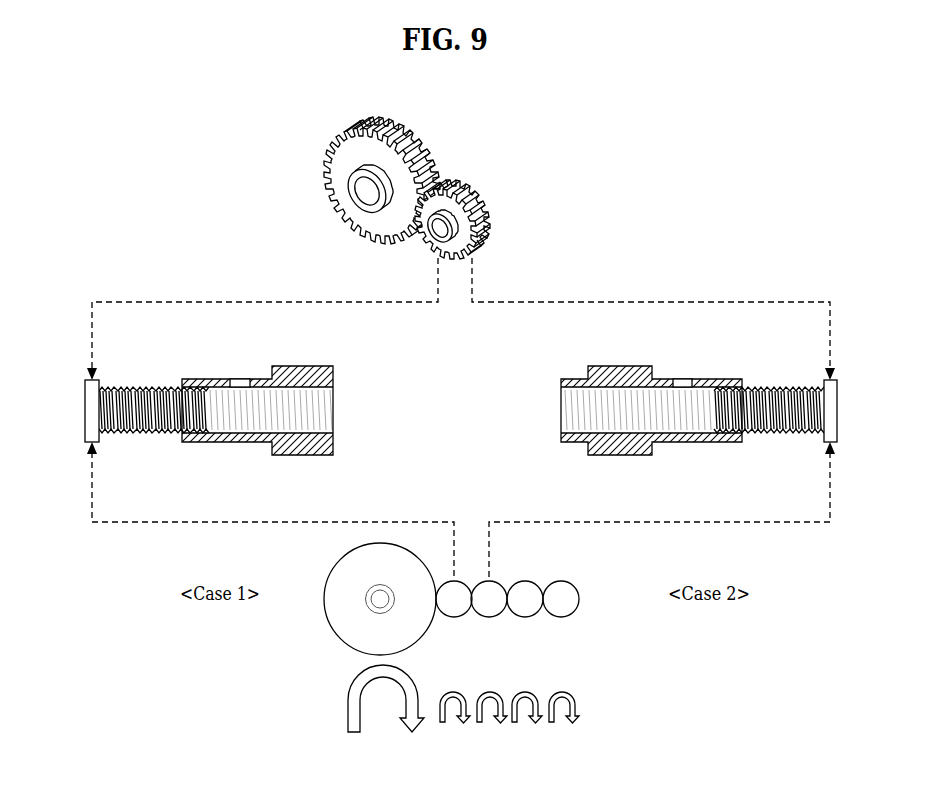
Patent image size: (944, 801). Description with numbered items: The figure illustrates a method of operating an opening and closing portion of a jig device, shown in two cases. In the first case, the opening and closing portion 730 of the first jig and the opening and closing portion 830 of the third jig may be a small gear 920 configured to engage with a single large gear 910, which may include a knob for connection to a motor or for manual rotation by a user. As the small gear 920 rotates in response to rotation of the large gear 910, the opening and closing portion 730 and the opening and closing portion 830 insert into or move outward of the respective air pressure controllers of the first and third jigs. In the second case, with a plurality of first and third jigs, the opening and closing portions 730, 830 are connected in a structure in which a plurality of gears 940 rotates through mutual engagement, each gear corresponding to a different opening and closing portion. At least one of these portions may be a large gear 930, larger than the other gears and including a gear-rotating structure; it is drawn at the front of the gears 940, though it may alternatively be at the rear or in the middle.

The large gear 910 is at (410, 135).
The small gear 920 is at (488, 243).
The opening and closing portion 730 is at (90, 412).
The opening and closing portion 830 is at (832, 412).
The large gear 930 is at (417, 645).
The gears 940 is at (562, 617).